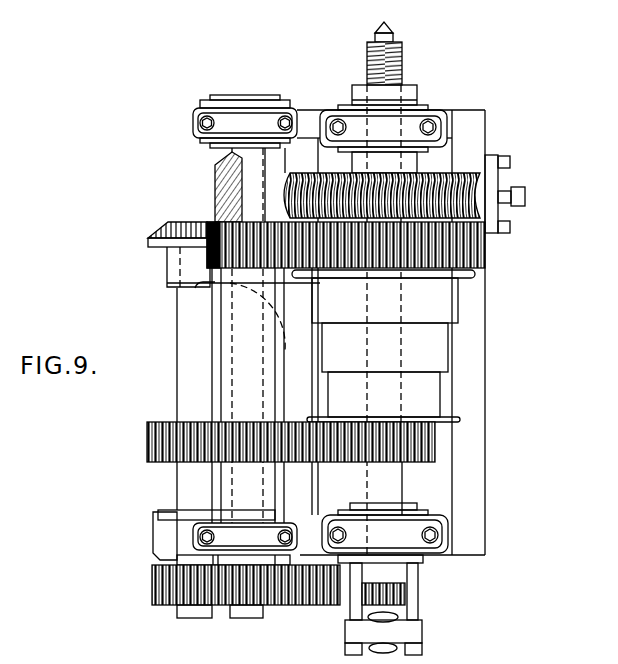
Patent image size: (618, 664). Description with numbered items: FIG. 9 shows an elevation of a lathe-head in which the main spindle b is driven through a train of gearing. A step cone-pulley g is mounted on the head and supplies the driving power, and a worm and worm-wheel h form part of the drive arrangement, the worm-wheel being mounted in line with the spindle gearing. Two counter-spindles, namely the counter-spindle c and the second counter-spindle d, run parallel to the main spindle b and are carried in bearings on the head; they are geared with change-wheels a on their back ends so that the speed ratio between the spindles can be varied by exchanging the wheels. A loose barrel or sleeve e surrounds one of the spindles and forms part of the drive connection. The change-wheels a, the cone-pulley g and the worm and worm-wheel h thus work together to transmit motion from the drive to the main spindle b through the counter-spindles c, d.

The change-wheels a is at (234, 591).
The main spindle b is at (385, 515).
The counter-spindle c is at (262, 395).
The second counter-spindle d is at (203, 395).
The loose barrel or sleeve e is at (243, 396).
The cone-pulley g is at (383, 346).
The worm and worm-wheel h is at (480, 195).